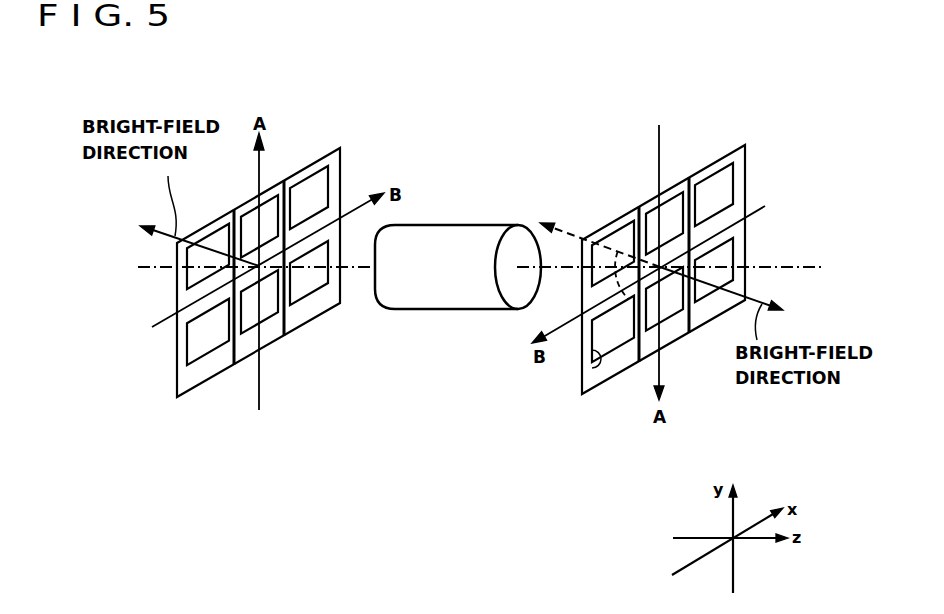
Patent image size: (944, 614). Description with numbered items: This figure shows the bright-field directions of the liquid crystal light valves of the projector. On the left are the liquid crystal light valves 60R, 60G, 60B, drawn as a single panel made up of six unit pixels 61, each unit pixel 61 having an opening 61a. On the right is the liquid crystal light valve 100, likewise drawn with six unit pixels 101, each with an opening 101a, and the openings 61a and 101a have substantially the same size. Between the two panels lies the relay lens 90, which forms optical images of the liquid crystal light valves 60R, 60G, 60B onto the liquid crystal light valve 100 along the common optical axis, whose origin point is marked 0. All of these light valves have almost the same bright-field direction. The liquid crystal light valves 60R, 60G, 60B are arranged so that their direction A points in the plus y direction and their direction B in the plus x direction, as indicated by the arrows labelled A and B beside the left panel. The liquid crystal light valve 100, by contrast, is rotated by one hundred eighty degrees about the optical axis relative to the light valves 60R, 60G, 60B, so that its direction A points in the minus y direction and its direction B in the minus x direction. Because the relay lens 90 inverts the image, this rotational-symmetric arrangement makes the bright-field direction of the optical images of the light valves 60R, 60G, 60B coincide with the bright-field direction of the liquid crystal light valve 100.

The liquid crystal light valve 60R is at (319, 158).
The liquid crystal light valve 60G is at (262, 258).
The liquid crystal light valve 60B is at (309, 197).
The unit pixel 61 is at (200, 386).
The opening 61a is at (292, 308).
The relay lens 90 is at (458, 225).
The liquid crystal light valve 100 is at (724, 140).
The unit pixel 101 is at (720, 318).
The opening 101a is at (597, 368).
The optical axis origin 0 is at (787, 270).